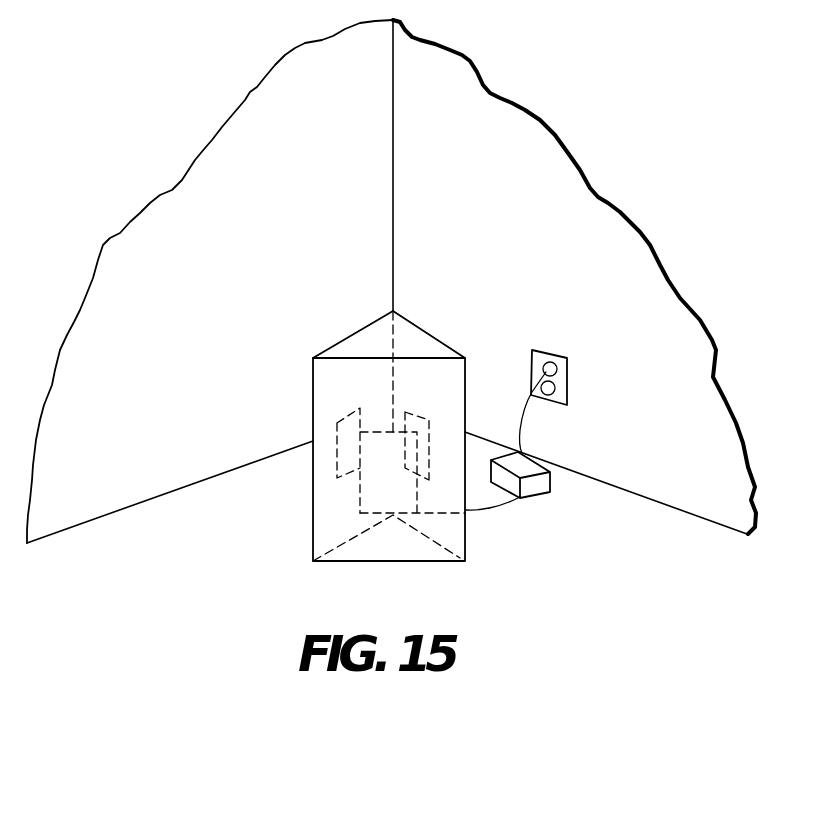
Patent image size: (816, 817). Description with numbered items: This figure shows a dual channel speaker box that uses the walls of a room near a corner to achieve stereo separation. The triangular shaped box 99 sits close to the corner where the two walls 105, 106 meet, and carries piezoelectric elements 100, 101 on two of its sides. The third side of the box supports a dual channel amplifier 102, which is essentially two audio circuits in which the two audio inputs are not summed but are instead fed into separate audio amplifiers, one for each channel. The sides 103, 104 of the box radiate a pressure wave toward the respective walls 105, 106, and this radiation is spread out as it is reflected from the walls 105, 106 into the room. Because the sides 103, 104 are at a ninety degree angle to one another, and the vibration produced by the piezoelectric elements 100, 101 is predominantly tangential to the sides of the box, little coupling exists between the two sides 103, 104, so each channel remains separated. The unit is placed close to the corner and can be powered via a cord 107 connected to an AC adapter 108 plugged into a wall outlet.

The triangular shaped box 99 is at (421, 342).
The piezoelectric element 100 is at (338, 447).
The piezoelectric element 101 is at (425, 420).
The dual channel amplifier 102 is at (372, 488).
The side 103 is at (328, 347).
The side 104 is at (458, 340).
The wall 105 is at (212, 157).
The wall 106 is at (545, 173).
The cord 107 is at (520, 428).
The AC adapter 108 is at (541, 490).